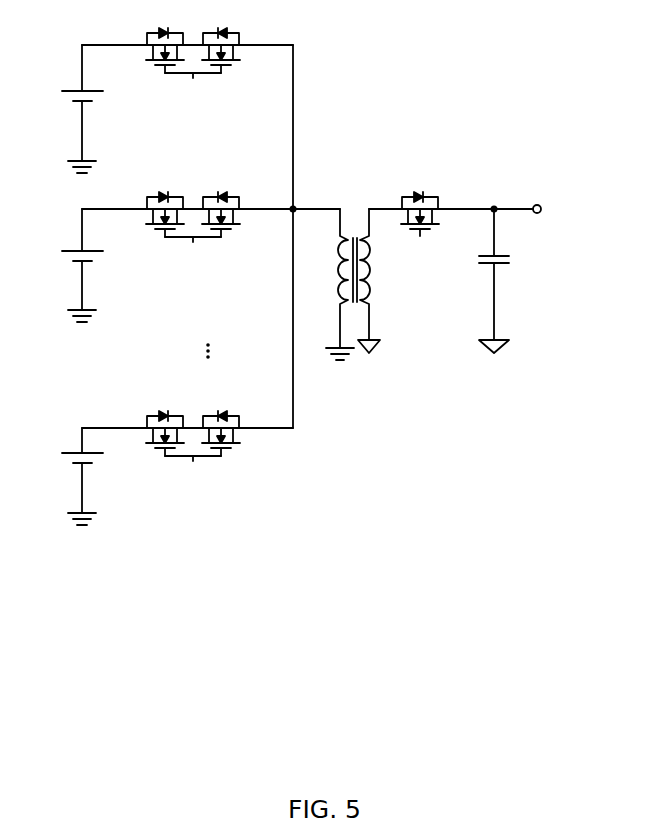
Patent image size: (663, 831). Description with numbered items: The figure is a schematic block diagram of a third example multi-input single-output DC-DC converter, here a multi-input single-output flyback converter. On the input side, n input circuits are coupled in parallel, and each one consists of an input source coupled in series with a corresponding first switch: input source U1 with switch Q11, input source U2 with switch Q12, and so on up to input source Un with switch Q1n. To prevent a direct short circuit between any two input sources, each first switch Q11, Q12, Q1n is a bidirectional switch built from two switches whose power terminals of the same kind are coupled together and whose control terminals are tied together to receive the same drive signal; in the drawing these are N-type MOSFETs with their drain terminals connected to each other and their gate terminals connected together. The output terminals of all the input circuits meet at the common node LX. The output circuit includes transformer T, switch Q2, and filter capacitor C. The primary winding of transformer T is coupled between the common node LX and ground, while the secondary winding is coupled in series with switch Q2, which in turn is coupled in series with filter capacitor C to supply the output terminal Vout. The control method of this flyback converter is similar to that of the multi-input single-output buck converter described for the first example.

The first switch Q11 is at (187, 48).
The first switch Q12 is at (187, 211).
The first switch Q1n is at (187, 430).
The input source U1 is at (68, 109).
The input source U2 is at (64, 265).
The input source Un is at (64, 476).
The common node LX is at (315, 199).
The transformer T is at (353, 284).
The switch Q2 is at (431, 205).
The output voltage terminal Vout is at (531, 194).
The filter capacitor C is at (504, 280).